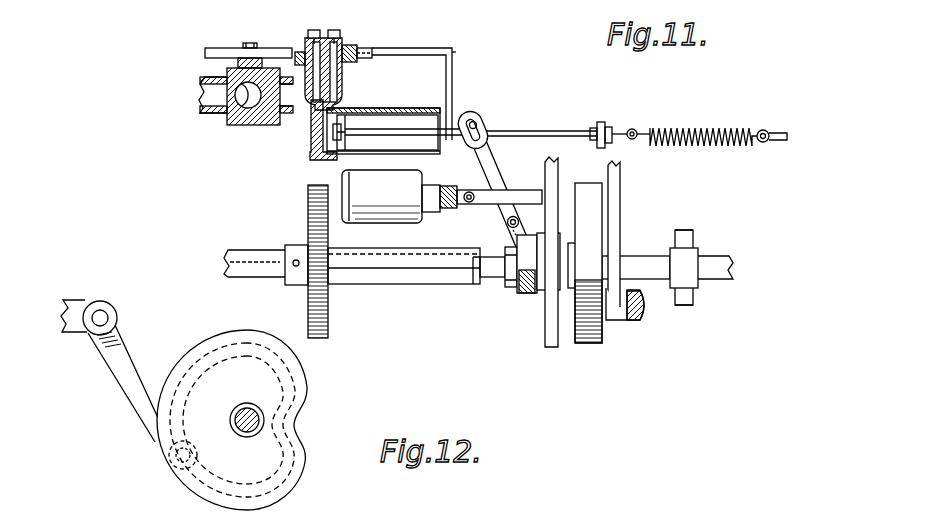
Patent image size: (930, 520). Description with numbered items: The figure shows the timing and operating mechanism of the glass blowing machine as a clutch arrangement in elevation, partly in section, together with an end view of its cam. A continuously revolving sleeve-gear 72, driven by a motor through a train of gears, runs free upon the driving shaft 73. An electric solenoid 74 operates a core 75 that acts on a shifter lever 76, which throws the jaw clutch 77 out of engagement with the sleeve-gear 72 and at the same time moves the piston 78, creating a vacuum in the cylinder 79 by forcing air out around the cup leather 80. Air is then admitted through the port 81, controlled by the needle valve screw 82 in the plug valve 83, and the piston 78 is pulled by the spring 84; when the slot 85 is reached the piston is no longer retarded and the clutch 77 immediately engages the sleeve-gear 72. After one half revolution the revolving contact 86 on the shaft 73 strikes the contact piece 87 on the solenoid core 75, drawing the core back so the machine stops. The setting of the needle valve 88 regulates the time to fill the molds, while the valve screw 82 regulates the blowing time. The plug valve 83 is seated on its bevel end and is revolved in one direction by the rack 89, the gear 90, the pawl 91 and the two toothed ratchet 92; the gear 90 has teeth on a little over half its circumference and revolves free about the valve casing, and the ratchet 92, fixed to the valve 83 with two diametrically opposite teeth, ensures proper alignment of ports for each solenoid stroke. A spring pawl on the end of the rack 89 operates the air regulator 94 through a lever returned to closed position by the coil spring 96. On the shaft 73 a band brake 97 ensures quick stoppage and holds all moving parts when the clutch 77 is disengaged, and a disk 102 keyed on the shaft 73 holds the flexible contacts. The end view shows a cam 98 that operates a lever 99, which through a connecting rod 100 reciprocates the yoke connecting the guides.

In FIG. 11, the sleeve-gear 72 is at (308, 203).
In FIG. 11, the shaft 73 is at (258, 249).
In FIG. 12, the shaft 73 is at (258, 418).
In FIG. 11, the electric solenoid 74 is at (392, 212).
In FIG. 11, the core 75 is at (462, 172).
In FIG. 11, the shifter lever 76 is at (497, 176).
In FIG. 11, the jaw clutch 77 is at (510, 288).
In FIG. 11, the piston 78 is at (546, 131).
In FIG. 11, the cylinder 79 is at (410, 99).
In FIG. 11, the cup leather 80 is at (345, 157).
In FIG. 11, the port 81 is at (347, 50).
In FIG. 11, the needle valve screw 82 is at (338, 33).
In FIG. 11, the plug valve 83 is at (343, 74).
In FIG. 11, the spring 84 is at (722, 120).
In FIG. 11, the slot 85 is at (430, 153).
In FIG. 11, the revolving contact 86 is at (547, 347).
In FIG. 11, the contact piece 87 is at (533, 184).
In FIG. 11, the needle valve 88 is at (318, 28).
In FIG. 11, the rack 89 is at (452, 58).
In FIG. 11, the gear 90 is at (298, 54).
In FIG. 11, the pawl 91 is at (423, 56).
In FIG. 11, the two toothed ratchet 92 is at (306, 60).
In FIG. 11, the air regulator 94 is at (206, 80).
In FIG. 11, the coil spring 96 is at (213, 59).
In FIG. 11, the band brake 97 is at (693, 235).
In FIG. 11, the cam 98 is at (600, 343).
In FIG. 12, the cam 98 is at (170, 457).
In FIG. 11, the lever 99 is at (620, 200).
In FIG. 12, the lever 99 is at (123, 367).
In FIG. 12, the connecting rod 100 is at (87, 294).
In FIG. 11, the disk 102 is at (540, 300).